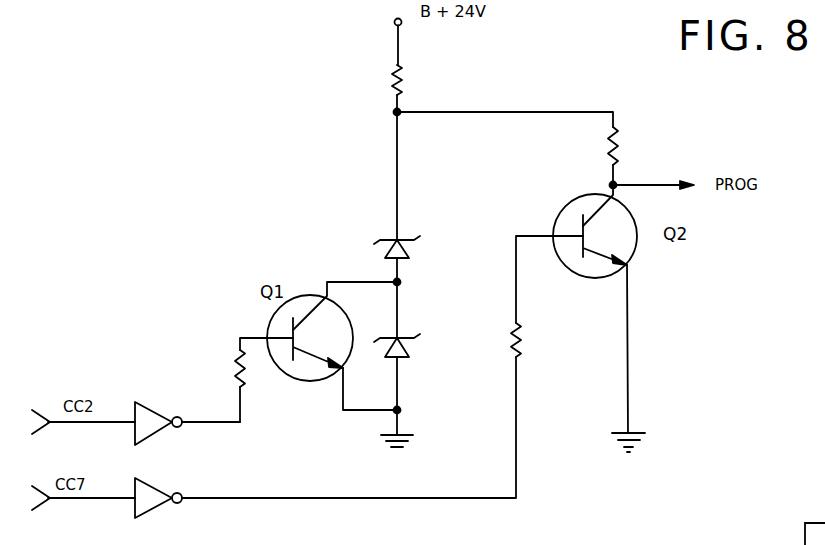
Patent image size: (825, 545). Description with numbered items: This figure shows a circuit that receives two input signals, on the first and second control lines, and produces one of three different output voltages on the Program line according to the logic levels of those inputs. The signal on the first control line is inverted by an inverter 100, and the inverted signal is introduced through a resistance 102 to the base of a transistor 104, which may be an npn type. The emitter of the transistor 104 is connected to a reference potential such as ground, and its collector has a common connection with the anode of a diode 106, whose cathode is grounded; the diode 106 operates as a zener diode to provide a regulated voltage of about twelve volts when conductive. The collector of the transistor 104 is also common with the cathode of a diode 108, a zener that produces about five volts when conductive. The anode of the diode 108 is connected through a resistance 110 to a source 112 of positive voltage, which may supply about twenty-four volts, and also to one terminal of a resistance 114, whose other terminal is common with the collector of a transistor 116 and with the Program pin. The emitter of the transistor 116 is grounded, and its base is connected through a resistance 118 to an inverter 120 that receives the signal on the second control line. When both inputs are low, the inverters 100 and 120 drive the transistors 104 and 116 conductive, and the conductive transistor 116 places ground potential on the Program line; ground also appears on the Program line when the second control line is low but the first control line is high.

The inverter 100 is at (153, 410).
The resistance 102 is at (243, 370).
The transistor 104 is at (313, 293).
The diode 106 is at (410, 352).
The diode 108 is at (410, 253).
The resistance 110 is at (404, 80).
The source of positive voltage 112 is at (394, 23).
The resistance 114 is at (616, 147).
The transistor 116 is at (573, 199).
The resistance 118 is at (517, 340).
The inverter 120 is at (155, 486).